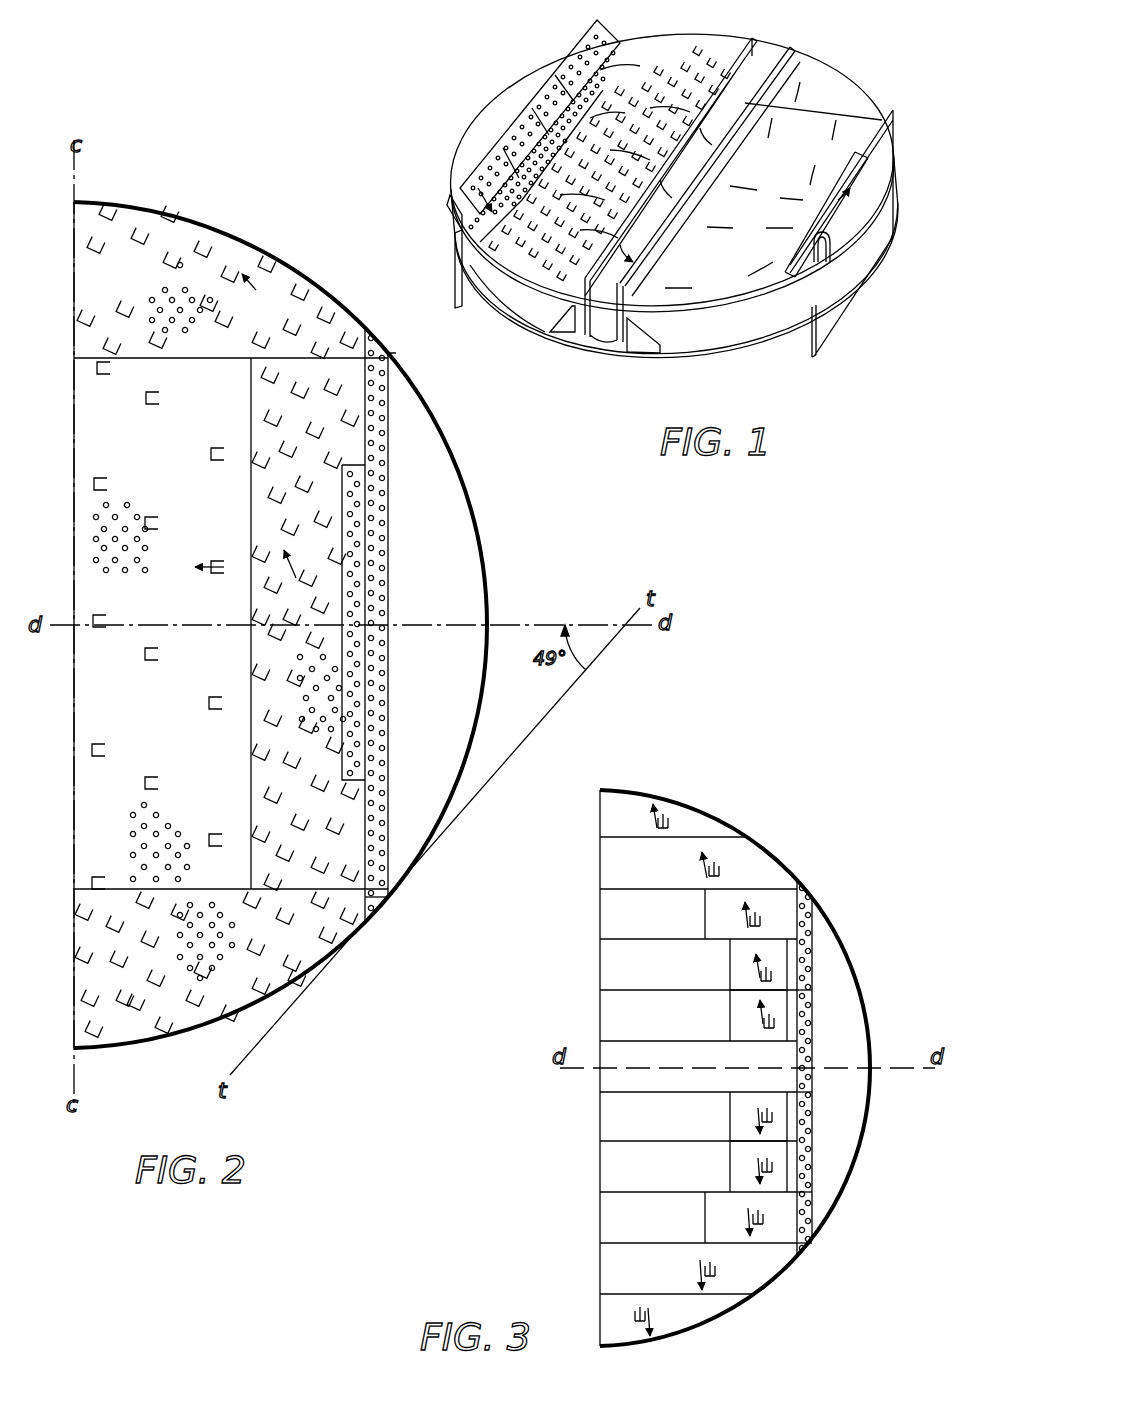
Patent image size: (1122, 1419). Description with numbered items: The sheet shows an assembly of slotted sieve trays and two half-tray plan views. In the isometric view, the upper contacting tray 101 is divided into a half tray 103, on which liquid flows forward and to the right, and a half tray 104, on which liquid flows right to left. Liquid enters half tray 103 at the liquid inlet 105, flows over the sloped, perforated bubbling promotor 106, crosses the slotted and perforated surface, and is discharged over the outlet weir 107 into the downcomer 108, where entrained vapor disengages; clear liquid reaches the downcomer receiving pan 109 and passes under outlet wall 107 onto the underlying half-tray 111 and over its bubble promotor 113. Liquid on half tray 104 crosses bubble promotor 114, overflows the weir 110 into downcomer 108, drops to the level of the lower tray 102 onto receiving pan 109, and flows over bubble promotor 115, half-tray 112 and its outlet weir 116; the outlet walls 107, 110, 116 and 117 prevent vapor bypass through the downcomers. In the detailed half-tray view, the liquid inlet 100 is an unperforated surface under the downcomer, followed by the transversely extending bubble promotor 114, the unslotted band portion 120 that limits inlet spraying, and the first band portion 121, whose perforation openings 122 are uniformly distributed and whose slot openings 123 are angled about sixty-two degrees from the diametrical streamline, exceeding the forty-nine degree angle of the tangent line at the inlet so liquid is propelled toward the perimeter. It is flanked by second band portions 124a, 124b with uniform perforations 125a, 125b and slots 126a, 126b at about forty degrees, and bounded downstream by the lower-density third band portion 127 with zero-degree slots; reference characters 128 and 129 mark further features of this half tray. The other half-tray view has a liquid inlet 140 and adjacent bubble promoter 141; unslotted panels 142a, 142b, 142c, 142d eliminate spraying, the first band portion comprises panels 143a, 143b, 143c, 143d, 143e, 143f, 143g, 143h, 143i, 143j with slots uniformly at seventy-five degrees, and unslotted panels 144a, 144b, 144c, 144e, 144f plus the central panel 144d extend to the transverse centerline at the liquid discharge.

In FIG. 1, the liquid inlet 100 is at (885, 188).
In FIG. 2, the liquid inlet 100 is at (486, 600).
In FIG. 1, the contacting tray 101 is at (868, 103).
In FIG. 1, the tray 102 is at (789, 337).
In FIG. 1, the half tray 103 is at (672, 52).
In FIG. 1, the half tray 104 is at (828, 84).
In FIG. 2, the half tray 104 is at (460, 427).
In FIG. 1, the liquid inlet 105 is at (472, 124).
In FIG. 1, the bubbling promotor 106 is at (601, 36).
In FIG. 1, the outlet weir 107 is at (755, 42).
In FIG. 1, the downcomer 108 is at (600, 340).
In FIG. 1, the downcomer receiving pan 109 is at (610, 350).
In FIG. 1, the weir 110 is at (790, 58).
In FIG. 1, the half-tray 111 is at (512, 305).
In FIG. 1, the half-tray 112 is at (712, 347).
In FIG. 1, the bubble promotor 113 is at (553, 332).
In FIG. 1, the bubble promotor 114 is at (893, 122).
In FIG. 2, the bubble promotor 114 is at (384, 905).
In FIG. 1, the bubble promotor 115 is at (648, 348).
In FIG. 1, the outlet weir 116 is at (858, 262).
In FIG. 1, the outlet wall 117 is at (456, 272).
In FIG. 2, the unslotted band portion 120 is at (352, 508).
In FIG. 2, the first band portion 121 is at (355, 836).
In FIG. 2, the perforation openings 122 is at (320, 700).
In FIG. 2, the slot openings 123 is at (250, 745).
In FIG. 2, the second band portion 124a is at (98, 272).
In FIG. 2, the second band portion 124b is at (76, 1042).
In FIG. 2, the perforations 125a is at (182, 262).
In FIG. 2, the perforations 125b is at (178, 985).
In FIG. 2, the slots 126a is at (262, 284).
In FIG. 2, the slots 126b is at (132, 1012).
In FIG. 2, the third band portion 127 is at (88, 648).
In FIG. 2, the perforations 128 is at (128, 508).
In FIG. 2, the directional valve 129 is at (90, 484).
In FIG. 3, the liquid inlet 140 is at (846, 1182).
In FIG. 3, the bubble promoter 141 is at (808, 1249).
In FIG. 3, the panel 142a is at (793, 968).
In FIG. 3, the panel 142b is at (793, 1018).
In FIG. 3, the panel 142c is at (792, 1120).
In FIG. 3, the panel 142d is at (792, 1166).
In FIG. 3, the panel 143a is at (705, 823).
In FIG. 3, the panel 143b is at (768, 871).
In FIG. 3, the panel 143c is at (728, 937).
In FIG. 3, the panel 143d is at (732, 968).
In FIG. 3, the panel 143e is at (737, 1001).
In FIG. 3, the panel 143f is at (775, 1094).
In FIG. 3, the panel 143g is at (737, 1163).
In FIG. 3, the panel 143h is at (787, 1226).
In FIG. 3, the panel 143i is at (785, 1283).
In FIG. 3, the panel 143j is at (719, 1314).
In FIG. 3, the panel 144a is at (614, 910).
In FIG. 3, the panel 144b is at (612, 962).
In FIG. 3, the panel 144c is at (612, 1012).
In FIG. 3, the central panel 144d is at (613, 1122).
In FIG. 3, the panel 144e is at (616, 1165).
In FIG. 3, the panel 144f is at (620, 1222).